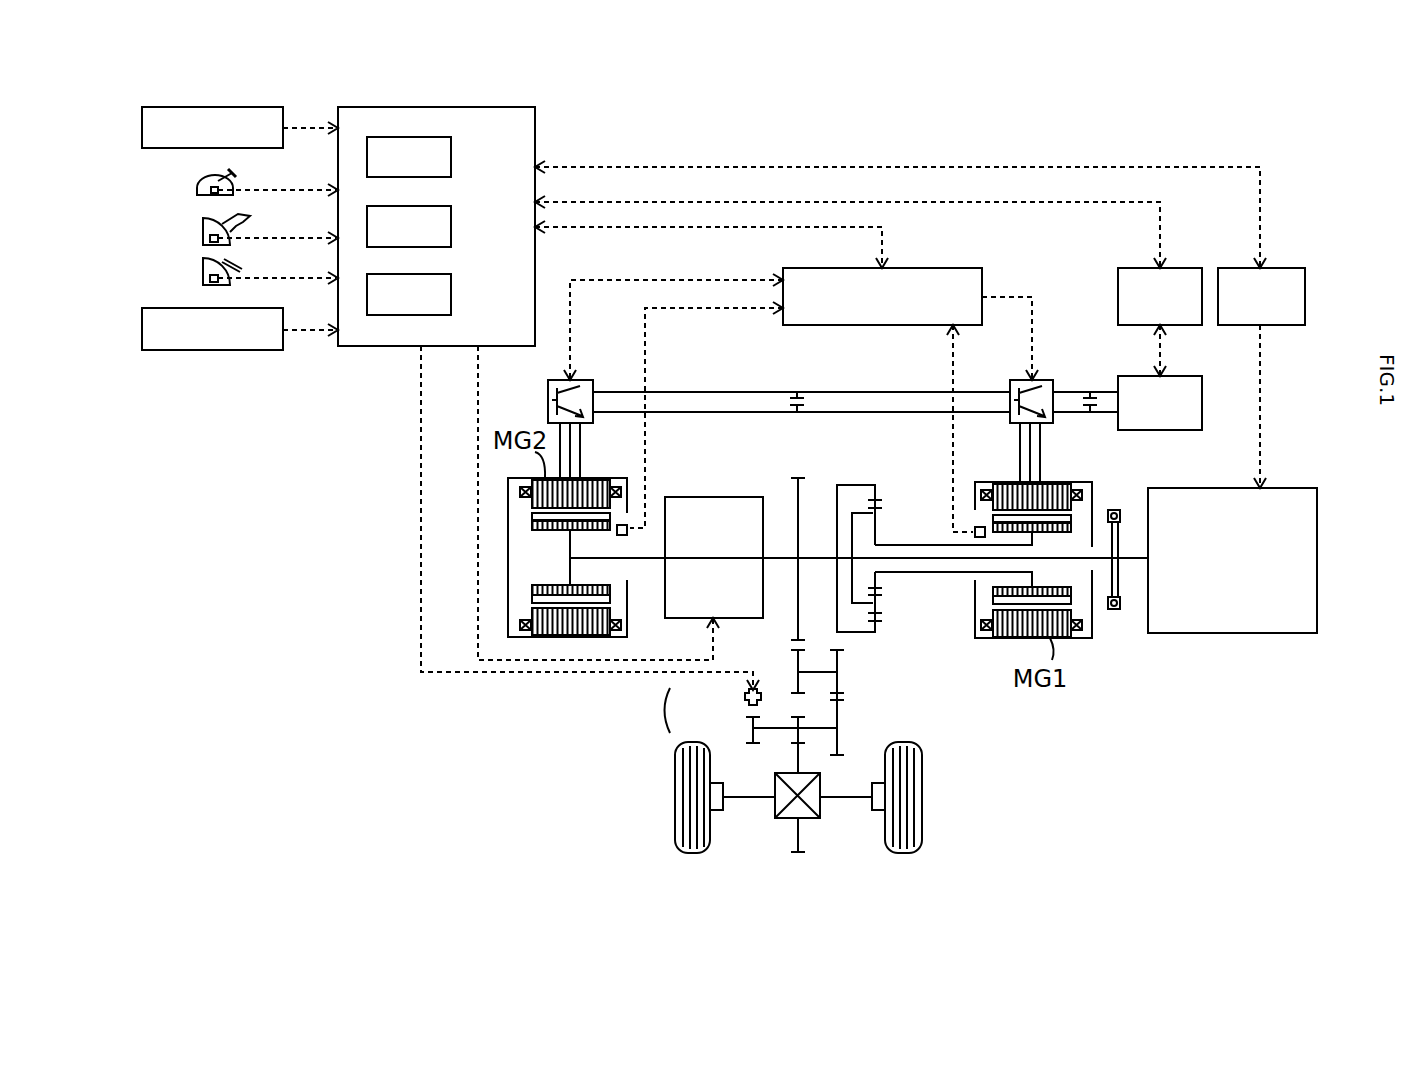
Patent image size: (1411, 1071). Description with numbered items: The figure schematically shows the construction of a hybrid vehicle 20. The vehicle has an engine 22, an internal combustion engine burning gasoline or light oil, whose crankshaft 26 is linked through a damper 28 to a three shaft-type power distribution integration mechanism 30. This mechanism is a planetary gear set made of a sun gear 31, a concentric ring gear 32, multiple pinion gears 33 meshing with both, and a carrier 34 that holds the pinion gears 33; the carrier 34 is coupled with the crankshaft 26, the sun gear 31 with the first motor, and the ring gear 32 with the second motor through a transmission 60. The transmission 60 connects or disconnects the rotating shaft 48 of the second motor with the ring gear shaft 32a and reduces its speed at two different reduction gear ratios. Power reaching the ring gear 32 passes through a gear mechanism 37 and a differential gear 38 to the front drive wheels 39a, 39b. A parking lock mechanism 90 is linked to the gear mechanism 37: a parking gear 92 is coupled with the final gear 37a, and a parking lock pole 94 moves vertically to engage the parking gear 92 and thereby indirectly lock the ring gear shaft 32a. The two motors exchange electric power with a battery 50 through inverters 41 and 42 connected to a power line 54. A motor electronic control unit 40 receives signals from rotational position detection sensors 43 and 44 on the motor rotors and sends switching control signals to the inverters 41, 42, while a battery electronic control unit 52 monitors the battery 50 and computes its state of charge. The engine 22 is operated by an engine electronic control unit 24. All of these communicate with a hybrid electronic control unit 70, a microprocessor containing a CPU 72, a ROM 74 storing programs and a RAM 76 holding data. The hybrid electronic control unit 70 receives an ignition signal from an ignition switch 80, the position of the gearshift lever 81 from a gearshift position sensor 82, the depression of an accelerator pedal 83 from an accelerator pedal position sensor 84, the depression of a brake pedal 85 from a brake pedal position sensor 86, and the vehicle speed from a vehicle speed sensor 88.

The hybrid vehicle 20 is at (1075, 136).
The engine 22 is at (1317, 520).
The engine electronic control unit 24 is at (1280, 268).
The crankshaft 26 is at (1131, 562).
The damper 28 is at (1120, 610).
The power distribution integration mechanism 30 is at (917, 544).
The sun gear 31 is at (875, 573).
The ring gear 32 is at (875, 625).
The ring gear shaft 32a is at (778, 555).
The pinion gears 33 is at (875, 600).
The carrier 34 is at (852, 530).
The gear mechanism 37 is at (933, 704).
The final gear 37a is at (837, 716).
The differential gear 38 is at (822, 812).
The drive wheel 39a is at (673, 832).
The drive wheel 39b is at (922, 832).
The motor electronic control unit 40 is at (925, 268).
The inverter 41 is at (1046, 380).
The inverter 42 is at (574, 378).
The rotational position detection sensor 43 is at (976, 527).
The rotational position detection sensor 44 is at (622, 525).
The rotating shaft 48 is at (643, 562).
The battery 50 is at (1160, 430).
The battery electronic control unit 52 is at (1138, 268).
The power line 54 is at (866, 400).
The transmission 60 is at (700, 497).
The hybrid electronic control unit 70 is at (436, 107).
The CPU 72 is at (452, 158).
The ROM 74 is at (452, 227).
The RAM 76 is at (452, 297).
The ignition switch 80 is at (142, 120).
The gearshift lever 81 is at (230, 174).
The gearshift position sensor 82 is at (211, 190).
The accelerator pedal 83 is at (228, 221).
The accelerator pedal position sensor 84 is at (210, 238).
The brake pedal 85 is at (232, 264).
The brake pedal position sensor 86 is at (210, 278).
The vehicle speed sensor 88 is at (142, 325).
The parking lock mechanism 90 is at (645, 715).
The parking gear 92 is at (750, 728).
The parking lock pole 94 is at (742, 695).